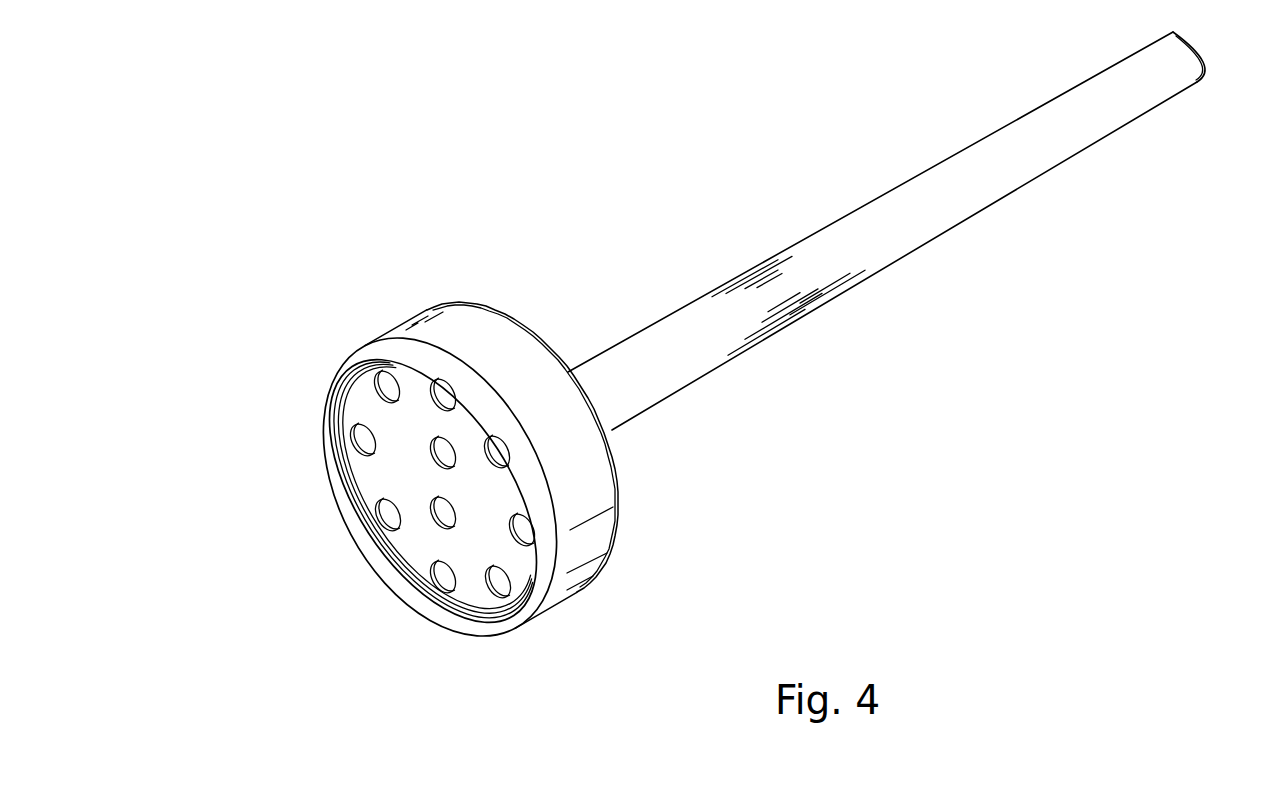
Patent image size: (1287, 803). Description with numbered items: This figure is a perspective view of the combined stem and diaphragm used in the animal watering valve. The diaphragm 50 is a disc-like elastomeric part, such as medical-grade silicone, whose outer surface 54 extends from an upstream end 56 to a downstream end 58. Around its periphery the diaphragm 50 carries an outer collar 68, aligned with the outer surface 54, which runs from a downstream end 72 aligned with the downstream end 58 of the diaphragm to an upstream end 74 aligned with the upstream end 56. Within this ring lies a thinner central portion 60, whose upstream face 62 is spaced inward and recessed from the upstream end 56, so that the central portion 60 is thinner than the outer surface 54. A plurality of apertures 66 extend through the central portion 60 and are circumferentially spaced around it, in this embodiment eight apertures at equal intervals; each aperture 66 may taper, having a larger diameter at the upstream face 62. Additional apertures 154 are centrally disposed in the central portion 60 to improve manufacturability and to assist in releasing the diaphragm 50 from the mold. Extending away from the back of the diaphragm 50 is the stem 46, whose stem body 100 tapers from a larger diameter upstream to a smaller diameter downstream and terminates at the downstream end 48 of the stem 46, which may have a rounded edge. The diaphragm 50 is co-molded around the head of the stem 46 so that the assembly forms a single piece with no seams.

The stem 46 is at (870, 237).
The downstream end of the stem 48 is at (1208, 72).
The diaphragm 50 is at (578, 590).
The outer surface of the diaphragm 54 is at (453, 323).
The upstream end of the diaphragm 56 is at (500, 627).
The downstream end of the diaphragm 58 is at (607, 575).
The central portion 60 is at (472, 588).
The upstream face 62 is at (410, 552).
The apertures 66 is at (365, 467).
The outer collar 68 is at (342, 390).
The downstream end of the outer collar 72 is at (437, 305).
The upstream end of the outer collar 74 is at (327, 400).
The stem body 100 is at (713, 345).
The additional apertures 154 is at (452, 437).